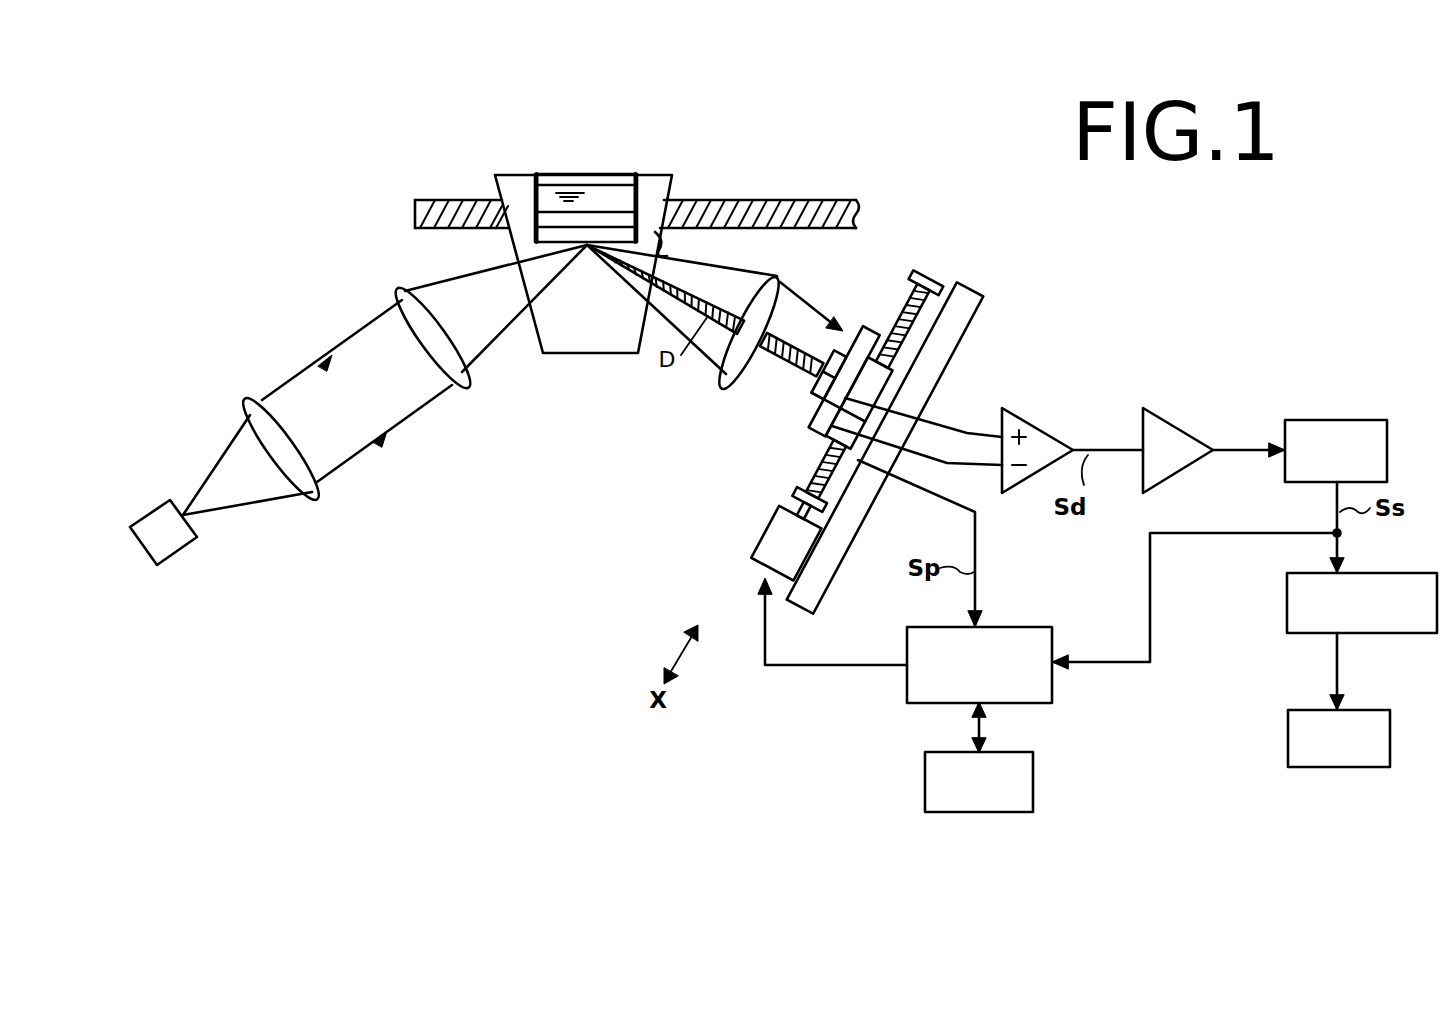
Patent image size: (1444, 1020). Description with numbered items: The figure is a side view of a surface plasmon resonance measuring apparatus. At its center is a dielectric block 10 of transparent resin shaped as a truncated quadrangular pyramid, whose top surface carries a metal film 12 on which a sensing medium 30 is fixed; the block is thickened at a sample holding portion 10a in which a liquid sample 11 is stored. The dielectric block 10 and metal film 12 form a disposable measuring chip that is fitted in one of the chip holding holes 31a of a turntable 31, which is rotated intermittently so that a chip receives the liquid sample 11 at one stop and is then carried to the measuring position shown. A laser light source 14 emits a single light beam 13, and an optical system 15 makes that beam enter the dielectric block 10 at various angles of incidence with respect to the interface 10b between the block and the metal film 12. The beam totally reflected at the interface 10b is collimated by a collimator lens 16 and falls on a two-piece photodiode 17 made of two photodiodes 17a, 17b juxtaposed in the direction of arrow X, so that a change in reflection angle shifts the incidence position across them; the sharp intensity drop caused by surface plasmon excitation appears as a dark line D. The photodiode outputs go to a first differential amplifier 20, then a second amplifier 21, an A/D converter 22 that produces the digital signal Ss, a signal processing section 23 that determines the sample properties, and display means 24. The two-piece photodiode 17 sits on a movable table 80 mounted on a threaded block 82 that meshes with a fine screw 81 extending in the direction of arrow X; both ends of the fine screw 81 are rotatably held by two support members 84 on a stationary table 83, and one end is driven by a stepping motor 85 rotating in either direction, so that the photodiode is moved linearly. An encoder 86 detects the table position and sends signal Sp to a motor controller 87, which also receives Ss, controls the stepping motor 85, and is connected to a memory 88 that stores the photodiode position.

The dielectric block 10 is at (592, 372).
The sample holding portion 10a is at (639, 195).
The interface 10b is at (622, 230).
The liquid sample 11 is at (592, 195).
The metal film 12 is at (537, 243).
The light beam 13 is at (222, 447).
The laser light source 14 is at (160, 500).
The optical system 15 is at (348, 505).
The collimator lens 16 is at (790, 285).
The two-piece photodiode 17 is at (801, 380).
The photodiode 17a is at (796, 422).
The photodiode 17b is at (829, 338).
The first differential amplifier 20 is at (1044, 418).
The second amplifier 21 is at (1178, 416).
The A/D converter 22 is at (1338, 418).
The signal processing section 23 is at (1285, 620).
The display means 24 is at (1285, 754).
The sensing medium 30 is at (528, 243).
The turntable 31 is at (801, 190).
The chip holding hole 31a is at (666, 246).
The movable table 80 is at (874, 330).
The fine screw 81 is at (814, 478).
The threaded block 82 is at (918, 357).
The stationary table 83 is at (976, 290).
The support member 84 is at (930, 276).
The stepping motor 85 is at (768, 545).
The encoder 86 is at (878, 486).
The motor controller 87 is at (1028, 626).
The memory 88 is at (1033, 768).